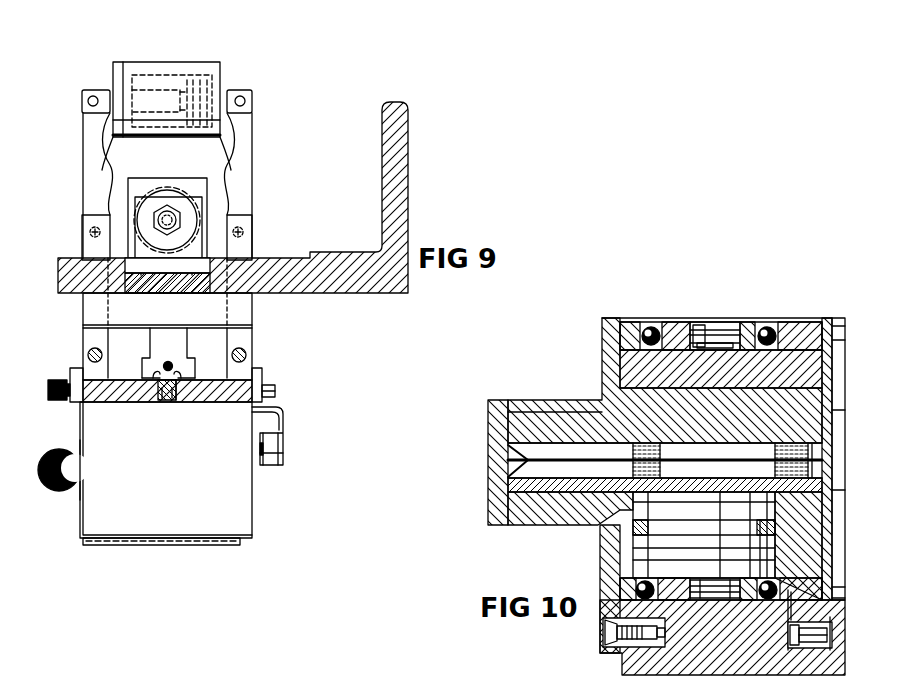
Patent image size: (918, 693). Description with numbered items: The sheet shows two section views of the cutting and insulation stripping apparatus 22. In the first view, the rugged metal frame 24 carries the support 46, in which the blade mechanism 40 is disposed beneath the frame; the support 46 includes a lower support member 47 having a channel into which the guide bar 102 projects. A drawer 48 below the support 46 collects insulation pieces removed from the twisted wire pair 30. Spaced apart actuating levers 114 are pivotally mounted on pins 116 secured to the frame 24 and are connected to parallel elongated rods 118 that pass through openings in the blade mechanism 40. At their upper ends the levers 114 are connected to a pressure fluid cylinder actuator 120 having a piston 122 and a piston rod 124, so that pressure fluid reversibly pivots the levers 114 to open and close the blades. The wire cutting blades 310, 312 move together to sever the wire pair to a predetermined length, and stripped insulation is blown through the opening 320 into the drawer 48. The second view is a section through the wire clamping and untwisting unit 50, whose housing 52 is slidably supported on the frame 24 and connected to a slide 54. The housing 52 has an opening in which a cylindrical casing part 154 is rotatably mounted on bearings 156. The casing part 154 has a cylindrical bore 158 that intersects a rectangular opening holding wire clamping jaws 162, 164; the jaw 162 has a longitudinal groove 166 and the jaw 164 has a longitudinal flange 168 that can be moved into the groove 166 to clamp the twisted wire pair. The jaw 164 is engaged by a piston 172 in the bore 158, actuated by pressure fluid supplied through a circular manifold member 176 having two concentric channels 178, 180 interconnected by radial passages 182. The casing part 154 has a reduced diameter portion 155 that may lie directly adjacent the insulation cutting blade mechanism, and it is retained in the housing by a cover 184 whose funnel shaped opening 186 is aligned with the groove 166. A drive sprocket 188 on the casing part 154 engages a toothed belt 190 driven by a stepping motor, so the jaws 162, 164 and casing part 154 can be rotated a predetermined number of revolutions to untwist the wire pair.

In FIG. 9, the cutting and insulation stripping apparatus 22 is at (421, 119).
In FIG. 9, the frame 24 is at (382, 165).
In FIG. 9, the twisted wire pair 30 is at (172, 360).
In FIG. 9, the wire cutting blade mechanism 40 is at (130, 379).
In FIG. 9, the support 46 is at (252, 313).
In FIG. 9, the lower support member 47 is at (265, 393).
In FIG. 9, the drawer 48 is at (80, 529).
In FIG. 9, the slide 54 is at (168, 294).
In FIG. 9, the guide bar 102 is at (180, 402).
In FIG. 9, the actuating levers 114 is at (84, 163).
In FIG. 9, the pins 116 is at (90, 231).
In FIG. 9, the elongated rods 118 is at (87, 356).
In FIG. 9, the pressure fluid cylinder actuator 120 is at (163, 62).
In FIG. 9, the piston 122 is at (198, 82).
In FIG. 9, the piston rod 124 is at (113, 100).
In FIG. 9, the wire cutting blade 310 is at (158, 388).
In FIG. 9, the wire cutting blade 312 is at (178, 386).
In FIG. 9, the opening 320 is at (168, 402).
In FIG. 10, the wire clamping and untwisting unit 50 is at (570, 337).
In FIG. 10, the housing 52 is at (634, 656).
In FIG. 10, the cylindrical casing part 154 is at (797, 358).
In FIG. 10, the reduced diameter portion 155 is at (526, 505).
In FIG. 10, the bearings 156 is at (634, 579).
In FIG. 10, the cylindrical bore 158 is at (655, 548).
In FIG. 10, the wire clamping jaw 162 is at (546, 400).
In FIG. 10, the wire clamping jaw 164 is at (520, 487).
In FIG. 10, the longitudinal groove 166 is at (594, 453).
In FIG. 10, the longitudinal flange 168 is at (530, 470).
In FIG. 10, the piston 172 is at (630, 592).
In FIG. 10, the circular manifold member 176 is at (738, 322).
In FIG. 10, the concentric channel 178 is at (703, 343).
In FIG. 10, the concentric channel 180 is at (712, 320).
In FIG. 10, the radial passages 182 is at (697, 322).
In FIG. 10, the cover 184 is at (490, 400).
In FIG. 10, the funnel shaped opening 186 is at (496, 447).
In FIG. 10, the drive sprocket 188 is at (787, 619).
In FIG. 10, the toothed belt 190 is at (791, 641).